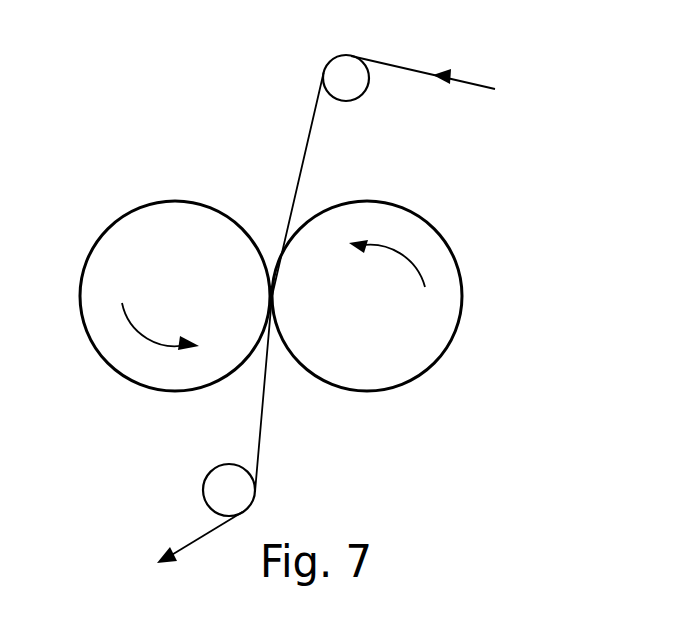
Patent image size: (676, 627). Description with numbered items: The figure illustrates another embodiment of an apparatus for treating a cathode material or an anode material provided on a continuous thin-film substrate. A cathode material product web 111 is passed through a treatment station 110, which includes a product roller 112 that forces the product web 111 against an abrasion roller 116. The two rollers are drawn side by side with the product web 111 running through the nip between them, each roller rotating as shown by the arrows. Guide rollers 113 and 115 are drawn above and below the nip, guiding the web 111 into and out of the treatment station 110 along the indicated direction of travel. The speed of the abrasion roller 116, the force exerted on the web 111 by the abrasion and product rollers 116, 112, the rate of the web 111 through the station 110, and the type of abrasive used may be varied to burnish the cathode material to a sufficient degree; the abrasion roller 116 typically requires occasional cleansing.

The treatment station 110 is at (556, 181).
The cathode material product web 111 is at (295, 183).
The product roller 112 is at (445, 240).
The guide roller 113 is at (347, 54).
The guide roller 115 is at (237, 497).
The abrasion roller 116 is at (80, 318).